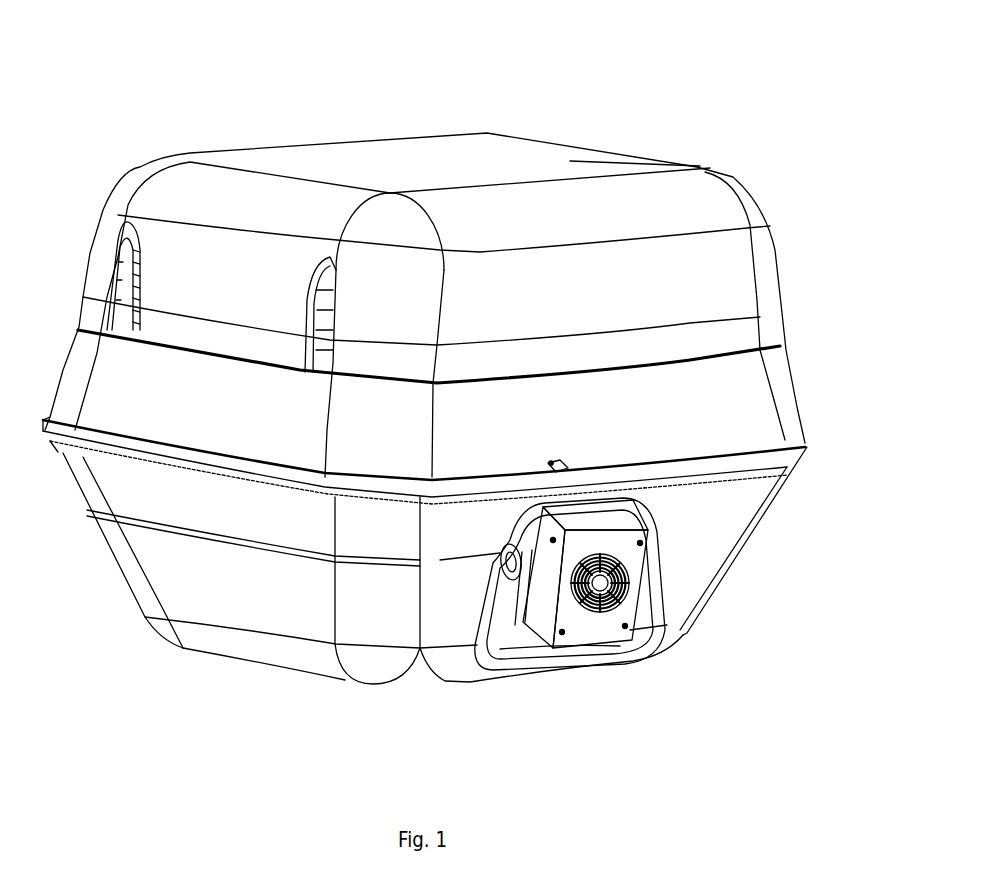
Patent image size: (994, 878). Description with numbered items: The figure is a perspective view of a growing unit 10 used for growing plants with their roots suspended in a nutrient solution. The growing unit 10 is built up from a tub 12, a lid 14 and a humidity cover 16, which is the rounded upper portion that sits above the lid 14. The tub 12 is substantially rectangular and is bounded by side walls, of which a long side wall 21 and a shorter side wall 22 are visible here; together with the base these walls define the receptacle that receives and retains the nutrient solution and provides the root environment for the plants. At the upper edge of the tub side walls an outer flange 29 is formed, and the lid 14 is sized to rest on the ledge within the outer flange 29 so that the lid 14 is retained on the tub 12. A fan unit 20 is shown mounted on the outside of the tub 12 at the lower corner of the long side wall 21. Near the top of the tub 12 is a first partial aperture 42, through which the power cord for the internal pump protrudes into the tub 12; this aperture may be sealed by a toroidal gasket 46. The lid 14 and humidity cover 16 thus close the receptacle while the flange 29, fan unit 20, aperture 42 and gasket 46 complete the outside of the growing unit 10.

The growing unit 10 is at (622, 107).
The tub 12 is at (762, 511).
The lid 14 is at (790, 402).
The humidity cover 16 is at (780, 278).
The fan unit 20 is at (620, 583).
The long side wall 21 is at (710, 517).
The shorter side wall 22 is at (223, 590).
The outer flange 29 is at (808, 448).
The first partial aperture 42 is at (565, 469).
The toroidal gasket 46 is at (551, 461).